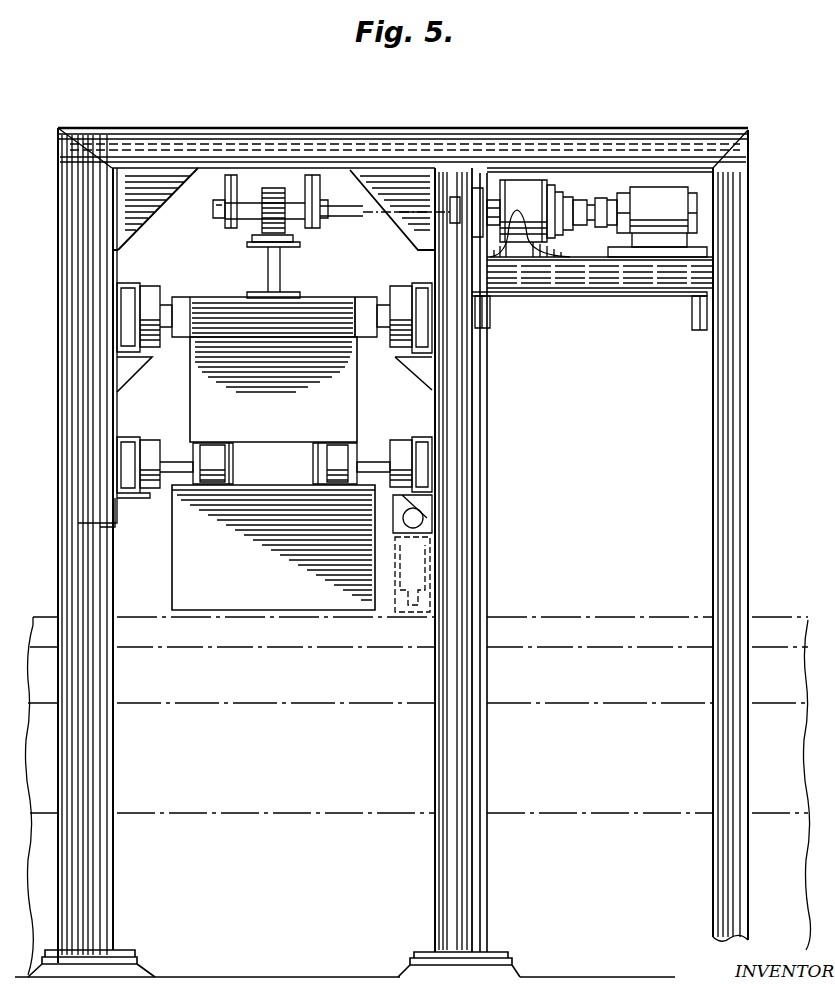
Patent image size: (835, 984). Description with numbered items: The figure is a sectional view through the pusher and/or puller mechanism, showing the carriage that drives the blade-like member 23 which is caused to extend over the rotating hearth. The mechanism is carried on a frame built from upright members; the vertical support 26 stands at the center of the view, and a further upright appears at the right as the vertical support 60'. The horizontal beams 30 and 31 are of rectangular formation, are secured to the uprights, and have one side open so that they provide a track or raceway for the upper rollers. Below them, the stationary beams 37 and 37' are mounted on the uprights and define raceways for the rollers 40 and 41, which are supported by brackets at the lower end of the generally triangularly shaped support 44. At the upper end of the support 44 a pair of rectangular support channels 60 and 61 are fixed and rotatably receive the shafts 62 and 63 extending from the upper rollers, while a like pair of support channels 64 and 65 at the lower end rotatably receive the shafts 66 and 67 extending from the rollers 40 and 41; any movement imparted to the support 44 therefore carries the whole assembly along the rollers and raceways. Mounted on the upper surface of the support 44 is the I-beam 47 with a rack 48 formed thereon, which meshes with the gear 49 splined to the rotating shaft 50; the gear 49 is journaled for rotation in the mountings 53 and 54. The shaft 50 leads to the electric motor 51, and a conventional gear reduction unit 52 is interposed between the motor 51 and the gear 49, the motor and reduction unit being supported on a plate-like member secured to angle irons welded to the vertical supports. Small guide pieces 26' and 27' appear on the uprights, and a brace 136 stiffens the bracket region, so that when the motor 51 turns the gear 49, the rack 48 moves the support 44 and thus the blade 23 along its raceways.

The blade-like member 23 is at (238, 569).
The vertical support 26 is at (462, 572).
The left guide bracket 26' is at (507, 316).
The right guide bracket 27' is at (672, 315).
The horizontal beam 30 is at (414, 284).
The horizontal beam 31 is at (126, 283).
The stationary beam 37 is at (408, 448).
The stationary beam 37' is at (123, 526).
The roller 40 is at (412, 440).
The roller 41 is at (150, 440).
The triangularly shaped support 44 is at (230, 408).
The I-beam 47 is at (282, 268).
The rack 48 is at (252, 238).
The gear 49 is at (270, 190).
The rotating shaft 50 is at (357, 215).
The electric motor 51 is at (668, 188).
The gear reduction unit 52 is at (532, 180).
The mounting 53 is at (212, 206).
The mounting 54 is at (320, 200).
The support channel 60 is at (269, 344).
The right upright post 60' is at (703, 535).
The support channel 61 is at (365, 330).
The shaft 62 is at (166, 305).
The shaft 63 is at (380, 305).
The support channel 64 is at (333, 458).
The support channel 65 is at (210, 458).
The shaft 66 is at (367, 462).
The shaft 67 is at (172, 462).
The gusset brace 136 is at (137, 379).